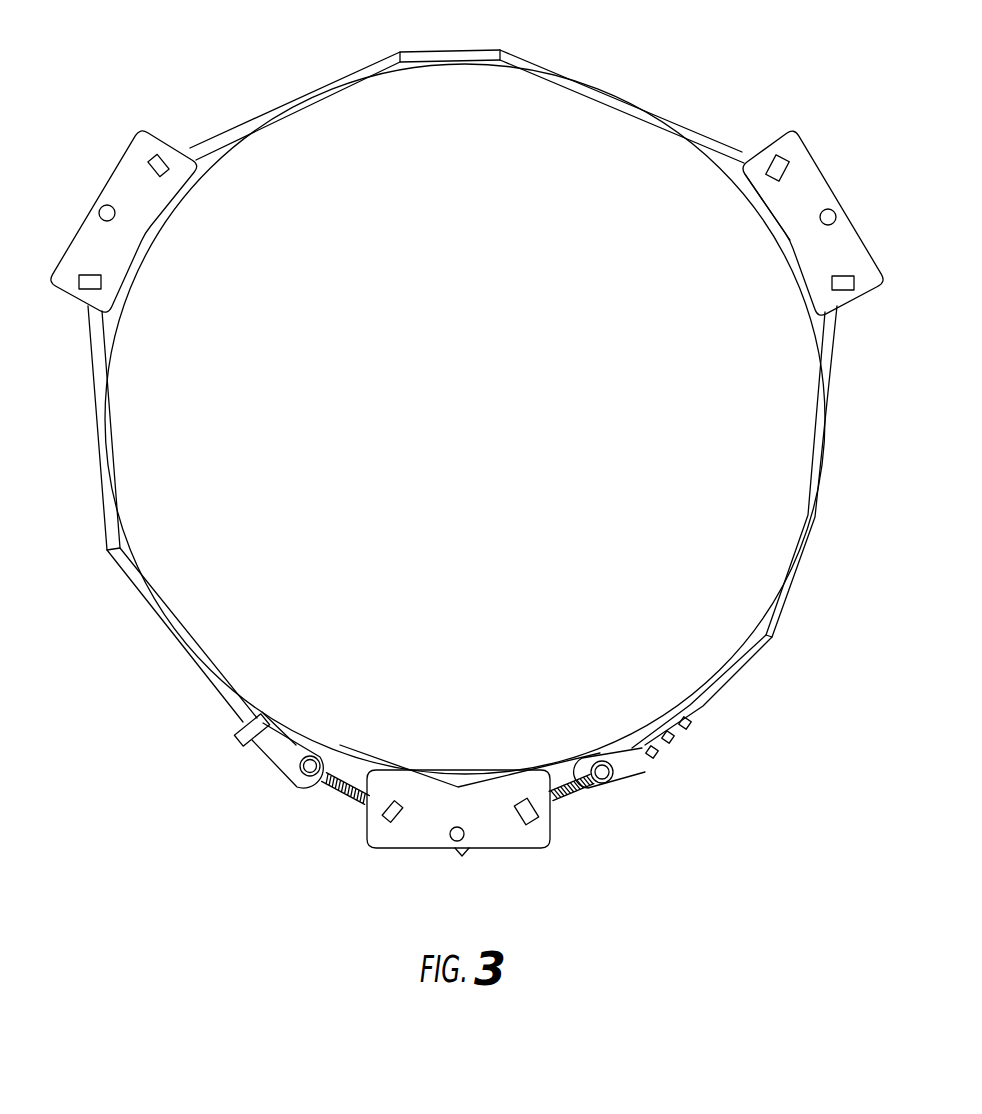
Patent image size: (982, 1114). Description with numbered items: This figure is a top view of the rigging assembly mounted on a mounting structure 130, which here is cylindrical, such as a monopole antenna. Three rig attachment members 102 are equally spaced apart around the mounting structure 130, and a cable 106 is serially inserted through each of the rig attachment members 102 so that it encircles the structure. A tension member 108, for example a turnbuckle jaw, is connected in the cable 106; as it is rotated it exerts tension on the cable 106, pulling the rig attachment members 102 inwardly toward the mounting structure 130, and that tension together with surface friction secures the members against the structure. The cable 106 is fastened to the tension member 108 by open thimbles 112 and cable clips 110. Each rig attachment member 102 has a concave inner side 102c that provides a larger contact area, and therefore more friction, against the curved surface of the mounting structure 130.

The rig attachment member 102 is at (78, 226).
The inner side 102c is at (790, 240).
The cable 106 is at (484, 50).
The tension member 108 is at (332, 787).
The cable clips 110 is at (673, 740).
The open thimbles 112 is at (610, 793).
The mounting structure 130 is at (472, 417).